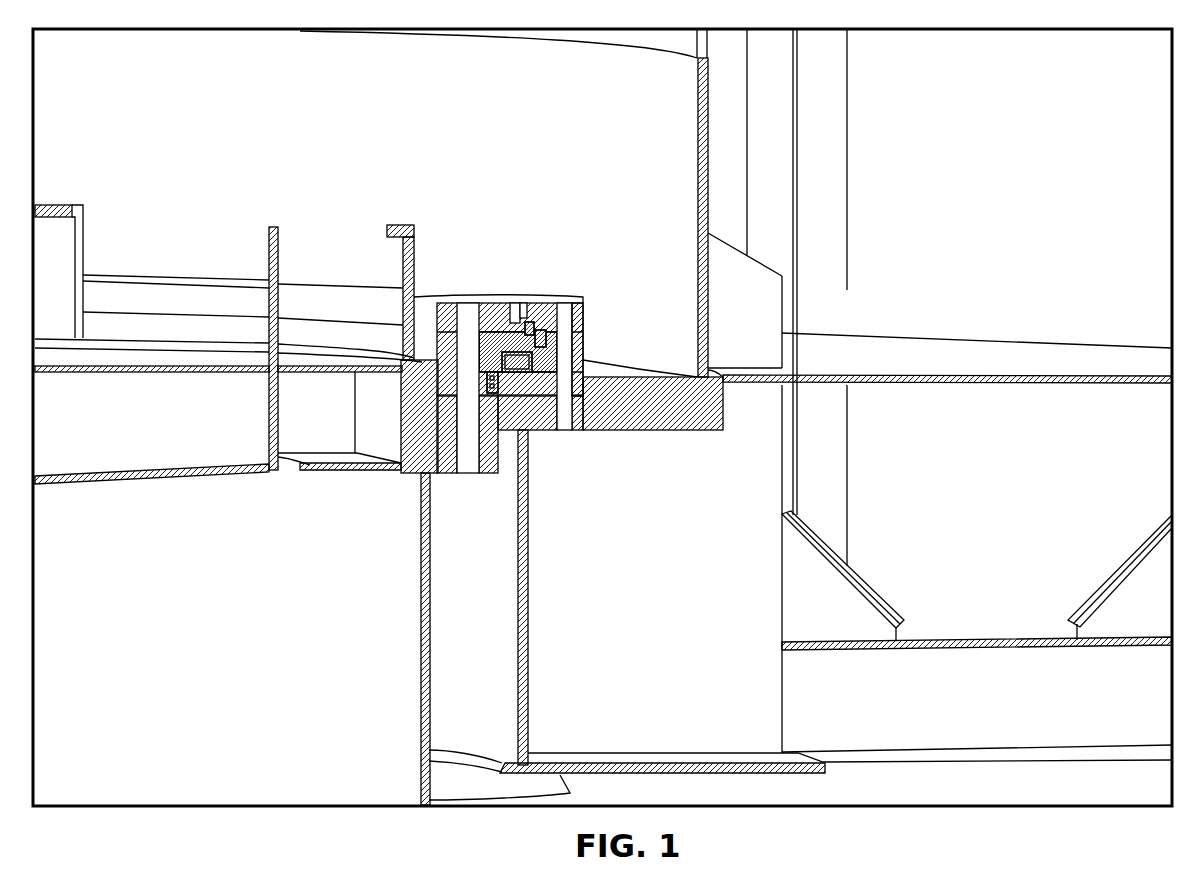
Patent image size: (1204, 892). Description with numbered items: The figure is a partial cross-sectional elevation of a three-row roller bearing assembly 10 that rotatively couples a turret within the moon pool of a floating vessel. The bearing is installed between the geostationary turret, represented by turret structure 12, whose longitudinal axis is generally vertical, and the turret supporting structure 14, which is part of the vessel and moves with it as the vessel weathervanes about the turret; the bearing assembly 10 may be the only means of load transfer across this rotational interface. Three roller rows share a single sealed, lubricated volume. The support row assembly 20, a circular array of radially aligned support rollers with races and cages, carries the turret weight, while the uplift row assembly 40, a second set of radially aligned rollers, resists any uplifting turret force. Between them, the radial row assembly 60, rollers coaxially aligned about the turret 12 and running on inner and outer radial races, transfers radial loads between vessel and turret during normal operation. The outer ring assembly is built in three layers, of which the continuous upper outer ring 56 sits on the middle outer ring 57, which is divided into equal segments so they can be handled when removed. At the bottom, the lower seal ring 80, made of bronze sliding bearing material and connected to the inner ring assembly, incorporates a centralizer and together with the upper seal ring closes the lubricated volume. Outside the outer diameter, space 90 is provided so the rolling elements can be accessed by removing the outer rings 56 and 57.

The three-row roller bearing assembly 10 is at (466, 228).
The turret structure 12 is at (415, 471).
The turret supporting structure 14 is at (532, 430).
The support row assembly 20 is at (540, 395).
The uplift row assembly 40 is at (525, 320).
The upper outer ring 56 is at (585, 303).
The middle outer ring 57 is at (585, 356).
The radial row assembly 60 is at (547, 338).
The lower seal ring 80 is at (484, 380).
The space 90 is at (658, 375).